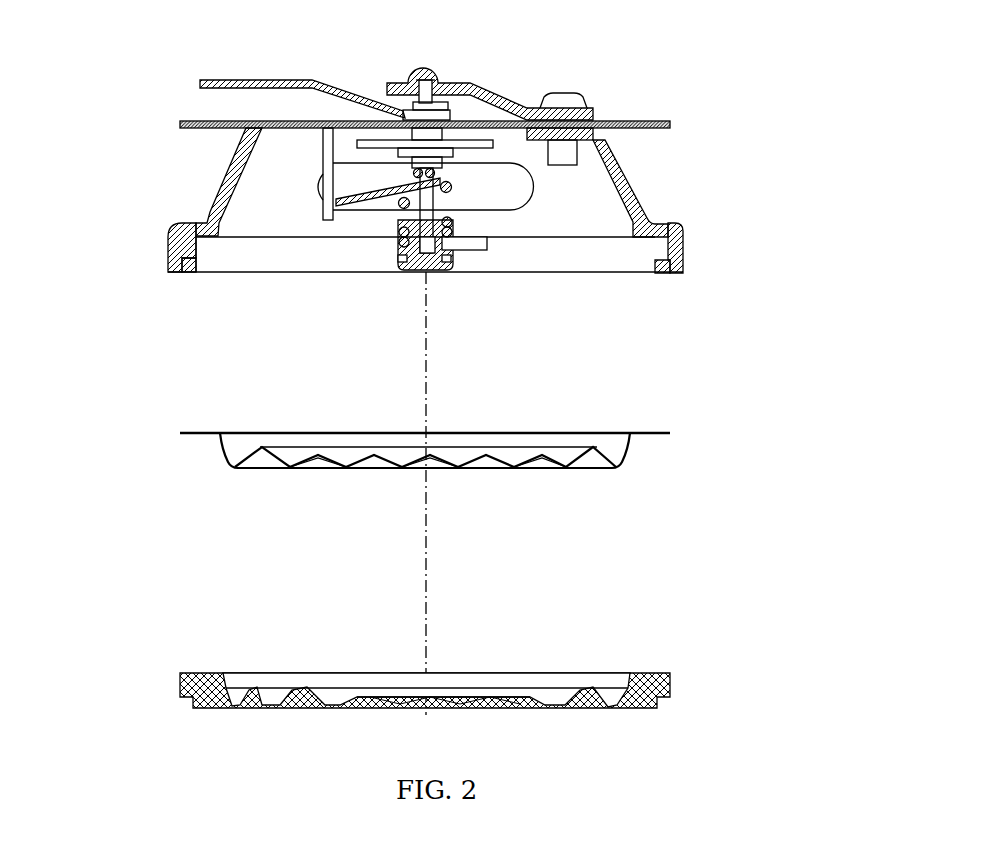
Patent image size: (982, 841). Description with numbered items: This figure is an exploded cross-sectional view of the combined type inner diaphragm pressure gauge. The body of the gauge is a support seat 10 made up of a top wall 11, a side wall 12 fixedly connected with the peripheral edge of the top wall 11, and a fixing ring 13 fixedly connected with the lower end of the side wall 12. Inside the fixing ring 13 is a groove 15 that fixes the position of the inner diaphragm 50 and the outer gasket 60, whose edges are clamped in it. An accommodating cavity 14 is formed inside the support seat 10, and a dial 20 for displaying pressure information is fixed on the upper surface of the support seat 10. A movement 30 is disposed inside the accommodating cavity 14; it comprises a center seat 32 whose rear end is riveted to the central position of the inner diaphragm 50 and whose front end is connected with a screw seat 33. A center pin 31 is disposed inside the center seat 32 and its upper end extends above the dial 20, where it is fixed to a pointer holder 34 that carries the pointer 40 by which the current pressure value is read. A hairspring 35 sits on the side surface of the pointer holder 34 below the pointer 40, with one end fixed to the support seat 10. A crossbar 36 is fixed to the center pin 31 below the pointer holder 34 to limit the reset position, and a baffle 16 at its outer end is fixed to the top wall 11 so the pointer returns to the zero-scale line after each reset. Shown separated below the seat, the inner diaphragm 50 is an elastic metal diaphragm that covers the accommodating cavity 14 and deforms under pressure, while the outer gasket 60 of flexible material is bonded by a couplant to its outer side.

The support seat 10 is at (489, 166).
The top wall 11 is at (594, 114).
The side wall 12 is at (630, 167).
The fixing ring 13 is at (477, 274).
The accommodating cavity 14 is at (592, 208).
The groove 15 is at (684, 262).
The baffle 16 is at (317, 183).
The dial 20 is at (200, 120).
The movement 30 is at (443, 253).
The center pin 31 is at (408, 72).
The center seat 32 is at (442, 273).
The screw seat 33 is at (402, 208).
The pointer holder 34 is at (403, 112).
The hairspring 35 is at (463, 143).
The crossbar 36 is at (347, 200).
The pointer 40 is at (248, 80).
The inner diaphragm 50 is at (318, 470).
The outer gasket 60 is at (342, 673).